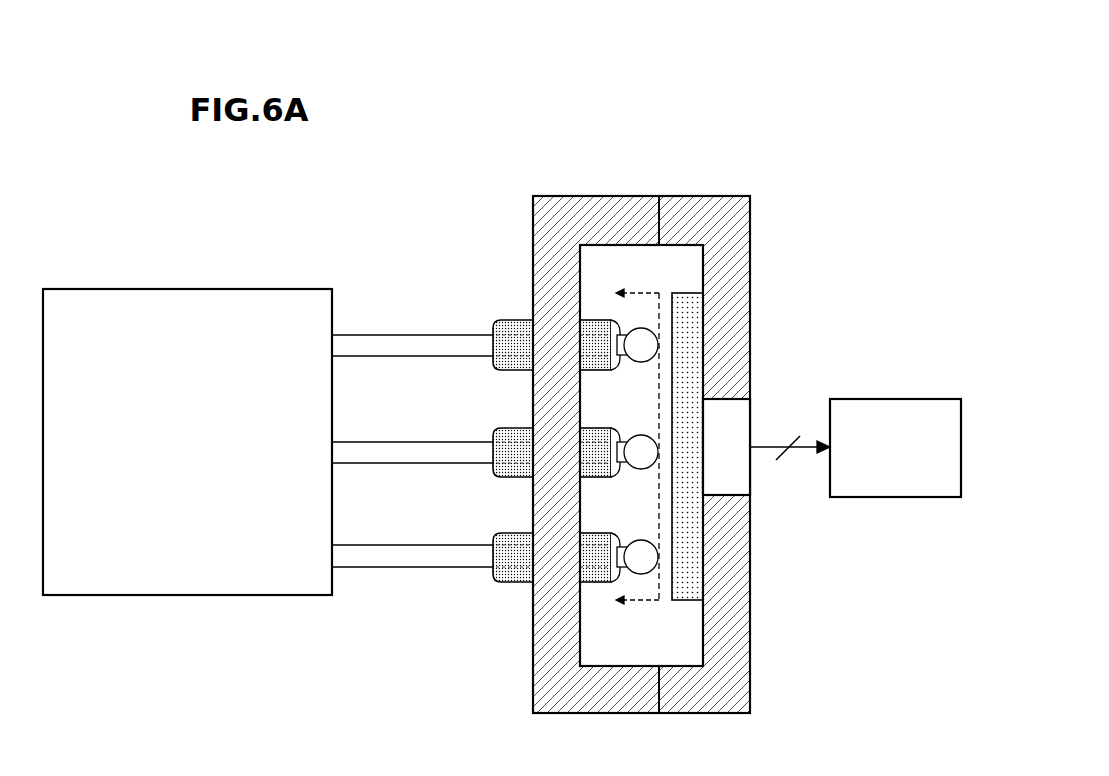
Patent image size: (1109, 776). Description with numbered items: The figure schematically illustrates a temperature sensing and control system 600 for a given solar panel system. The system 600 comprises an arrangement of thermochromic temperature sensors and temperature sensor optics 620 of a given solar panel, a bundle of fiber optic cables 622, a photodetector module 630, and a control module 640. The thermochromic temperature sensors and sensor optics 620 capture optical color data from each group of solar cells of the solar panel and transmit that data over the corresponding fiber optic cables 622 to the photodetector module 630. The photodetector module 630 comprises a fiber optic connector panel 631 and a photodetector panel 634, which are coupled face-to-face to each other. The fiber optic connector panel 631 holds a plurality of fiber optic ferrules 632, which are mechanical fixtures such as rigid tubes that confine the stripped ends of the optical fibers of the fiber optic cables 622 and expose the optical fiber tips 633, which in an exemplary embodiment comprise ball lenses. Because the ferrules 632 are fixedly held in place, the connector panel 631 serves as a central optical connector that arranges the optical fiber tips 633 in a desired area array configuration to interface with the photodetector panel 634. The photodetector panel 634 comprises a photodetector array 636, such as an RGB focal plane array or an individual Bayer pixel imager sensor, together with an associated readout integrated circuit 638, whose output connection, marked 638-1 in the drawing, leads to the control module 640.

The temperature sensing and control system 600 is at (261, 156).
The thermochromic temperature sensors and temperature sensor optics 620 is at (100, 288).
The bundle of fiber optic cables 622 is at (417, 545).
The photodetector module 630 is at (648, 396).
The fiber optic connector panel 631 is at (533, 270).
The fiber optic ferrules 632 is at (506, 320).
The optical fiber tips 633 is at (643, 362).
The photodetector panel 634 is at (760, 454).
The photodetector array 636 is at (693, 347).
The readout integrated circuit (ROIC) 638 is at (752, 425).
The multi-channel indicator 638-1 is at (791, 461).
The control module 640 is at (875, 398).